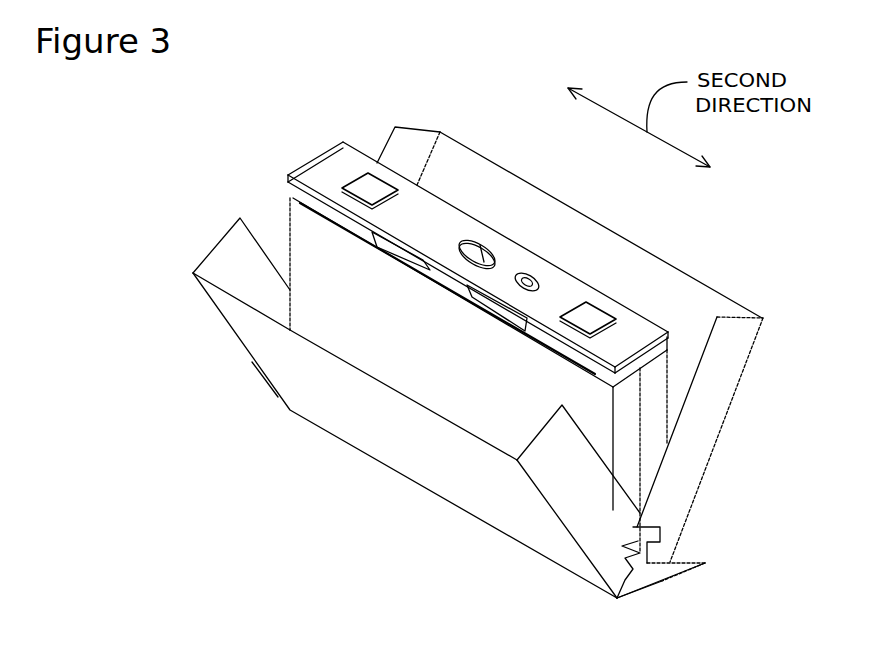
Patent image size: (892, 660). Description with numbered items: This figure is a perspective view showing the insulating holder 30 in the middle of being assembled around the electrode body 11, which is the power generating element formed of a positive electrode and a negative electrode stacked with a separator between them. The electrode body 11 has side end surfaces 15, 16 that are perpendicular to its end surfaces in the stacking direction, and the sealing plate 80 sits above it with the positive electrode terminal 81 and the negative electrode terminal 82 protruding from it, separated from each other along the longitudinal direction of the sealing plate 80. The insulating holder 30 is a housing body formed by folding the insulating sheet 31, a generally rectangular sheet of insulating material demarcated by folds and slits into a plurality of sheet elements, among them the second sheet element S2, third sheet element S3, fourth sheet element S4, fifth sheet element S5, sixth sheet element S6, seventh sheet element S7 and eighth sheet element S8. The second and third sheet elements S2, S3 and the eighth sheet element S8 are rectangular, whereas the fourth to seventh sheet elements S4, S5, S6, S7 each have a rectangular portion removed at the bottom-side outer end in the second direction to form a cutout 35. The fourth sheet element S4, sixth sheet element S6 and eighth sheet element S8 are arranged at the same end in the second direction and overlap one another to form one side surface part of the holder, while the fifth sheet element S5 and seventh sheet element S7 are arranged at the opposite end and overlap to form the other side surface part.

The electrode body 11 is at (501, 344).
The side end surface 15 is at (652, 418).
The side end surface 16 is at (290, 233).
The insulating holder 30 is at (534, 220).
The insulating sheet 31 is at (737, 439).
The cutout 35 is at (640, 547).
The sealing plate 80 is at (459, 222).
The positive electrode terminal 81 is at (592, 308).
The negative electrode terminal 82 is at (372, 182).
The second sheet element S2 is at (553, 223).
The third sheet element S3 is at (392, 427).
The fourth sheet element S4 is at (698, 438).
The fifth sheet element S5 is at (415, 140).
The sixth sheet element S6 is at (580, 492).
The seventh sheet element S7 is at (232, 263).
The eighth sheet element S8 is at (687, 580).